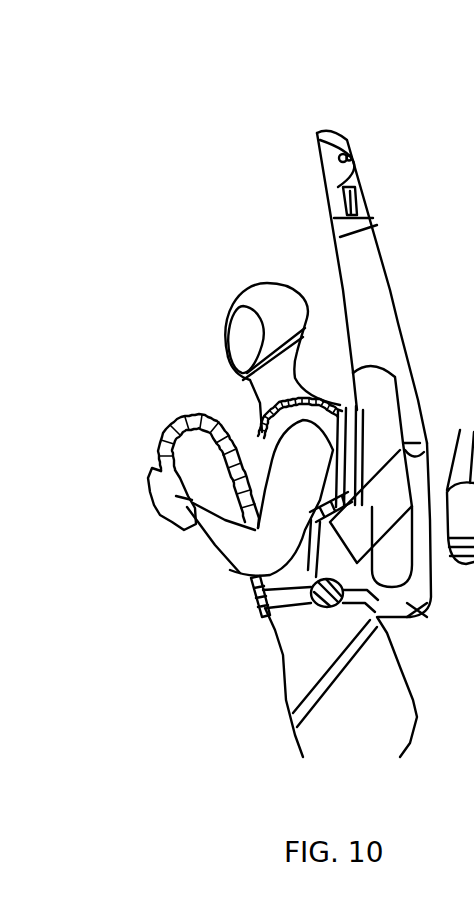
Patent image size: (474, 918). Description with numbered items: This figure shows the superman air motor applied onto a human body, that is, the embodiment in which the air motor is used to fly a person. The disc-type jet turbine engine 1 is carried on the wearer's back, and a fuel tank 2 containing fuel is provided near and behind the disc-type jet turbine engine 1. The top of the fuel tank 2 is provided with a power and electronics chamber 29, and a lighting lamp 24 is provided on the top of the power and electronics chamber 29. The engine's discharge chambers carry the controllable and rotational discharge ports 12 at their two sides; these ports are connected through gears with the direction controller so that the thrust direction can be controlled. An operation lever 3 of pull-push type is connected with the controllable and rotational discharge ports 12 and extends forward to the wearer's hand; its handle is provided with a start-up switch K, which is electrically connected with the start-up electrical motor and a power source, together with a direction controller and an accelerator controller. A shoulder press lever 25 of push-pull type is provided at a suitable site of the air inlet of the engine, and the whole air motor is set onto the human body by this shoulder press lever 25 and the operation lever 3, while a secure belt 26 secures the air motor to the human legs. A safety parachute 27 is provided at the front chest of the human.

The disc-type jet turbine engine 1 is at (388, 387).
The fuel tank 2 is at (378, 613).
The operation lever 3 is at (177, 423).
The controllable and rotational discharge ports 12 is at (378, 616).
The lighting lamp 24 is at (330, 157).
The shoulder press lever 25 is at (258, 410).
The secure belt 26 is at (263, 615).
The safety parachute 27 is at (230, 510).
The power and electronics chamber 29 is at (337, 207).
The start-up switch K is at (150, 487).